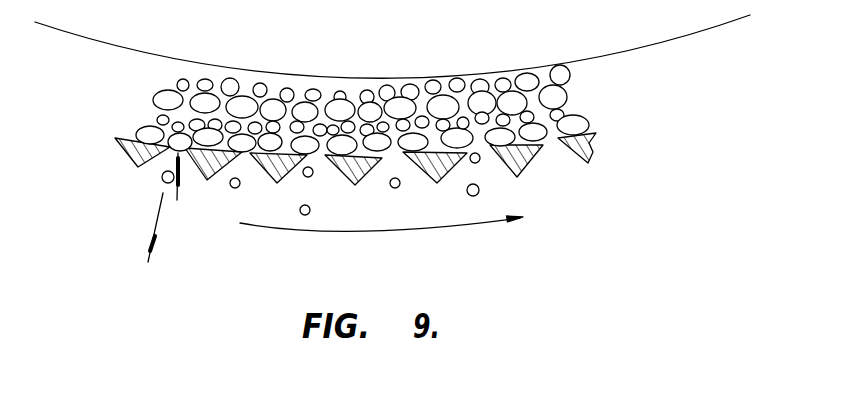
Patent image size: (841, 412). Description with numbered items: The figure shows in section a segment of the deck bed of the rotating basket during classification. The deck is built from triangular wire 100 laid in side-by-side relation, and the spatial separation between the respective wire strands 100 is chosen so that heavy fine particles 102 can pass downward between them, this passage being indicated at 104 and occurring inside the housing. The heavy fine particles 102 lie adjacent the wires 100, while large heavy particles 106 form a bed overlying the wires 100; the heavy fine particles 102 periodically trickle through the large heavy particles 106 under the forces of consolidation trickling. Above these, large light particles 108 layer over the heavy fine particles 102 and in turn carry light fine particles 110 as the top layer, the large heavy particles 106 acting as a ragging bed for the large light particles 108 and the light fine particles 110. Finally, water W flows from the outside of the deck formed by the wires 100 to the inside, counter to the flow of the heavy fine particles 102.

The triangular wire 100 is at (533, 166).
The heavy fine particles 102 is at (464, 121).
The downward passage of heavy fine particles 104 is at (152, 228).
The large heavy particles 106 is at (578, 116).
The large light particles 108 is at (167, 98).
The light fine particles 110 is at (233, 86).
The water W is at (179, 197).